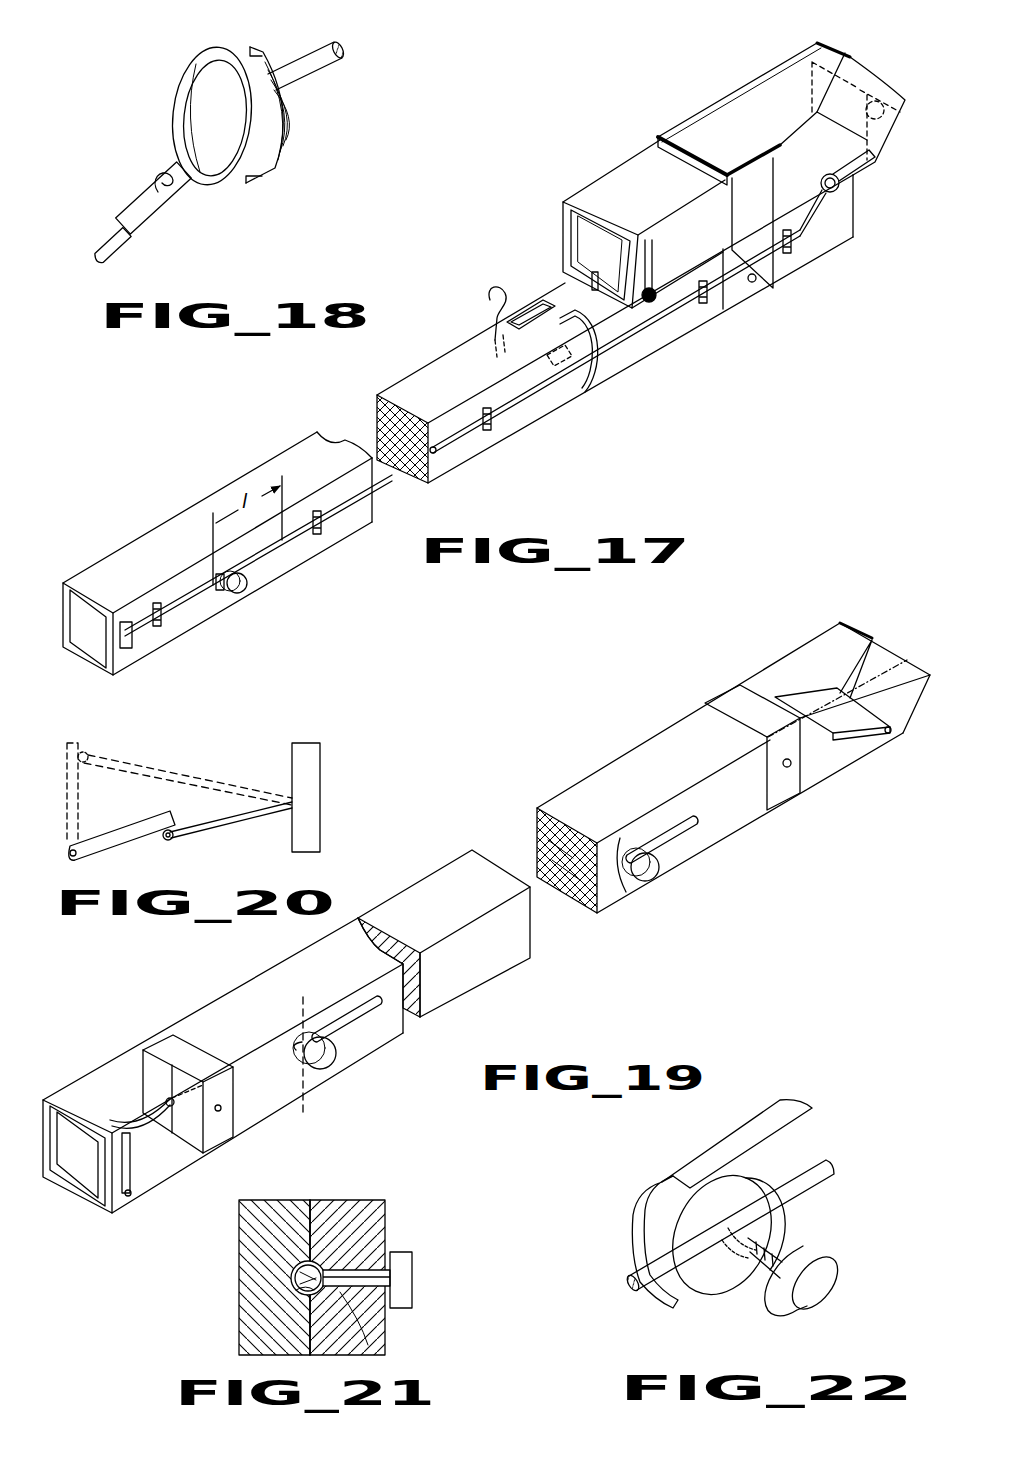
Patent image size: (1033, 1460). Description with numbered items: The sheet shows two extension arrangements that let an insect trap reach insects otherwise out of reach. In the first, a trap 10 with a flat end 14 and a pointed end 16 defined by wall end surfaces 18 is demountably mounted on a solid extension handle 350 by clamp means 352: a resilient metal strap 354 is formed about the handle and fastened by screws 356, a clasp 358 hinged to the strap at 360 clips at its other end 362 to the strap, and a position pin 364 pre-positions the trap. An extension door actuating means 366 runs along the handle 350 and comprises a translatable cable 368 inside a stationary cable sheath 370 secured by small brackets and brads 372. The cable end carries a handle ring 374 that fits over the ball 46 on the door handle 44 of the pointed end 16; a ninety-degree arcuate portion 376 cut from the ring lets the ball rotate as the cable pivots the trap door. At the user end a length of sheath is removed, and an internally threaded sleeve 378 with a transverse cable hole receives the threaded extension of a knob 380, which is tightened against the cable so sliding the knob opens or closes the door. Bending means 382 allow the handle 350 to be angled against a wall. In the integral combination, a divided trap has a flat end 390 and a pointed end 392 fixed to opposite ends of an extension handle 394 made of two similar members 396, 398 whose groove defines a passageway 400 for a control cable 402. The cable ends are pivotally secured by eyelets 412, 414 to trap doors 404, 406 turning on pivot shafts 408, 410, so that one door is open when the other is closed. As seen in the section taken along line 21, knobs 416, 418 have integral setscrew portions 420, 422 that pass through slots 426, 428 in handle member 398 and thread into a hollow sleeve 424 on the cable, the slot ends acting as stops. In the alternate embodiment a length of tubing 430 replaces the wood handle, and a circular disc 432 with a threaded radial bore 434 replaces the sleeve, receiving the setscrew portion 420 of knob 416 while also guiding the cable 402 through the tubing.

In FIG. 17, the trap 10 is at (768, 58).
In FIG. 17, the flat end 14 is at (577, 186).
In FIG. 17, the pointed end 16 is at (842, 50).
In FIG. 17, the wall end surfaces 18 is at (852, 136).
In FIG. 19, the section line 21 is at (303, 1000).
In FIG. 18, the door handle 44 is at (301, 48).
In FIG. 17, the door handle 44 is at (870, 163).
In FIG. 18, the ball 46 is at (290, 123).
In FIG. 17, the extension handle 350 is at (487, 470).
In FIG. 17, the clamp means 352 is at (704, 132).
In FIG. 17, the strap 354 is at (731, 316).
In FIG. 17, the screws 356 is at (758, 284).
In FIG. 17, the clasp 358 is at (660, 137).
In FIG. 17, the hinge 360 is at (708, 98).
In FIG. 17, the clip end 362 is at (757, 153).
In FIG. 17, the position pin 364 is at (548, 285).
In FIG. 17, the extension door actuating means 366 is at (793, 250).
In FIG. 18, the cable 368 is at (118, 249).
In FIG. 17, the cable 368 is at (424, 470).
In FIG. 17, the cable sheath 370 is at (540, 398).
In FIG. 17, the brackets and brads 372 is at (706, 303).
In FIG. 18, the handle ring 374 is at (250, 186).
In FIG. 17, the handle ring 374 is at (842, 186).
In FIG. 18, the arcuate portion 376 is at (283, 150).
In FIG. 17, the internally threaded sleeve 378 is at (216, 578).
In FIG. 17, the knob 380 is at (248, 590).
In FIG. 17, the bending means 382 is at (527, 300).
In FIG. 19, the flat end 390 is at (55, 1085).
In FIG. 19, the pointed end 392 is at (845, 620).
In FIG. 20, the extension handle 394 is at (306, 740).
In FIG. 19, the extension handle 394 is at (462, 852).
In FIG. 21, the extension handle 394 is at (312, 1196).
In FIG. 19, the handle member 396 is at (392, 888).
In FIG. 21, the handle member 396 is at (262, 1198).
In FIG. 19, the handle member 398 is at (458, 912).
In FIG. 21, the handle member 398 is at (365, 1198).
In FIG. 19, the passageway 400 is at (168, 1095).
In FIG. 21, the passageway 400 is at (292, 1272).
In FIG. 20, the control cable 402 is at (213, 822).
In FIG. 19, the control cable 402 is at (126, 1124).
In FIG. 21, the control cable 402 is at (295, 1284).
In FIG. 22, the control cable 402 is at (822, 1180).
In FIG. 20, the trap door 404 is at (160, 815).
In FIG. 19, the trap door 404 is at (98, 1170).
In FIG. 19, the trap door 406 is at (858, 745).
In FIG. 20, the pivot shaft 408 is at (80, 858).
In FIG. 19, the pivot shaft 408 is at (130, 1198).
In FIG. 19, the pivot shaft 410 is at (903, 734).
In FIG. 20, the eyelet 412 is at (168, 841).
In FIG. 19, the eyelet 412 is at (112, 1118).
In FIG. 19, the eyelet 414 is at (806, 770).
In FIG. 19, the knob 416 is at (334, 1062).
In FIG. 21, the knob 416 is at (414, 1278).
In FIG. 22, the knob 416 is at (834, 1283).
In FIG. 19, the knob 418 is at (655, 880).
In FIG. 19, the setscrew portion 420 is at (300, 1050).
In FIG. 21, the setscrew portion 420 is at (386, 1268).
In FIG. 22, the setscrew portion 420 is at (790, 1258).
In FIG. 19, the setscrew portion 422 is at (623, 895).
In FIG. 21, the sleeve 424 is at (296, 1298).
In FIG. 19, the slot 426 is at (345, 1012).
In FIG. 21, the slot 426 is at (388, 1320).
In FIG. 19, the slot 428 is at (680, 832).
In FIG. 22, the tubing 430 is at (745, 1113).
In FIG. 22, the circular disc 432 is at (727, 1296).
In FIG. 22, the threaded radial bore 434 is at (733, 1255).